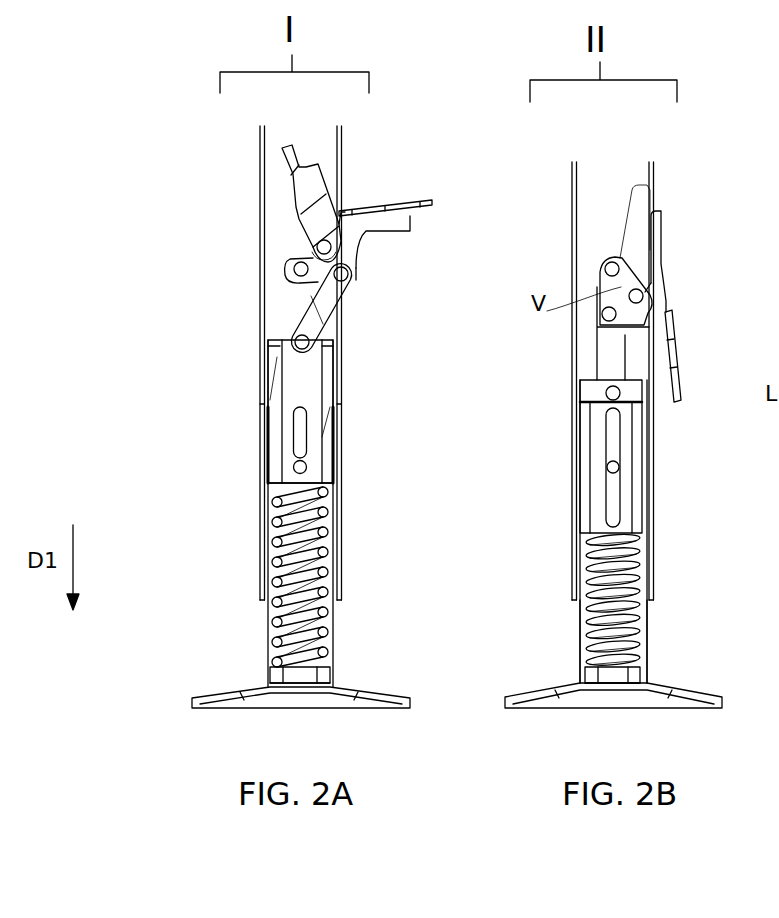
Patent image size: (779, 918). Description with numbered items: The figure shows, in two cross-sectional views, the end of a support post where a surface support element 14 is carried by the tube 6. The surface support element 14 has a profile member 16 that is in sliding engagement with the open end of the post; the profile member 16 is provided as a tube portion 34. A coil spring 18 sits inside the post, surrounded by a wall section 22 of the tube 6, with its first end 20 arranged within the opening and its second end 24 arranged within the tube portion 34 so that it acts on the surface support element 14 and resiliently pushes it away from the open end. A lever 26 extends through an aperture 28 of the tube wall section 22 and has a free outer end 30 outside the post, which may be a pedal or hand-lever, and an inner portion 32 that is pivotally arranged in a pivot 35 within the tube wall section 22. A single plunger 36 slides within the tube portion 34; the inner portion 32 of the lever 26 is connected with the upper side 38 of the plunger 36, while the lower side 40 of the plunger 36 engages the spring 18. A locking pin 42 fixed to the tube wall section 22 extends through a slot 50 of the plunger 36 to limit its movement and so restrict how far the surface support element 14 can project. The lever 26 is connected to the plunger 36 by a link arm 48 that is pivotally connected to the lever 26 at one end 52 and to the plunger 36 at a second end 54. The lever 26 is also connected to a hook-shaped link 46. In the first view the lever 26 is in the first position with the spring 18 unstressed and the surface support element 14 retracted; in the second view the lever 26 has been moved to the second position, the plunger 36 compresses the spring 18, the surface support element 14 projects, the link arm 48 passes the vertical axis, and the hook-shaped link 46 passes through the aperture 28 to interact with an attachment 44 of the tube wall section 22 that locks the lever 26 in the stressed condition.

In FIG. 2B, the tube 6 is at (653, 498).
In FIG. 2A, the surface support element 14 is at (195, 697).
In FIG. 2A, the profile member 16 is at (229, 513).
In FIG. 2B, the profile member 16 is at (563, 531).
In FIG. 2A, the spring 18 is at (293, 524).
In FIG. 2A, the first end of the spring 20 is at (295, 490).
In FIG. 2A, the tube wall section 22 is at (350, 563).
In FIG. 2B, the tube wall section 22 is at (478, 600).
In FIG. 2A, the second end of the spring 24 is at (302, 662).
In FIG. 2A, the lever 26 is at (352, 230).
In FIG. 2A, the aperture 28 is at (375, 258).
In FIG. 2A, the free outer end 30 is at (432, 203).
In FIG. 2A, the inner portion 32 is at (290, 280).
In FIG. 2A, the tube portion 34 is at (262, 652).
In FIG. 2B, the tube portion 34 is at (578, 640).
In FIG. 2A, the pivot 35 is at (296, 266).
In FIG. 2B, the pivot 35 is at (607, 263).
In FIG. 2A, the plunger 36 is at (300, 390).
In FIG. 2B, the upper side of the plunger 38 is at (598, 396).
In FIG. 2B, the lower side of the plunger 40 is at (600, 535).
In FIG. 2A, the locking pin 42 is at (298, 467).
In FIG. 2B, the attachment 44 is at (660, 200).
In FIG. 2A, the hook-shaped link 46 is at (302, 192).
In FIG. 2B, the hook-shaped link 46 is at (664, 232).
In FIG. 2A, the link arm 48 is at (325, 298).
In FIG. 2A, the slot 50 is at (300, 435).
In FIG. 2B, the one end of the link arm 52 is at (604, 318).
In FIG. 2B, the second end of the link arm 54 is at (620, 393).